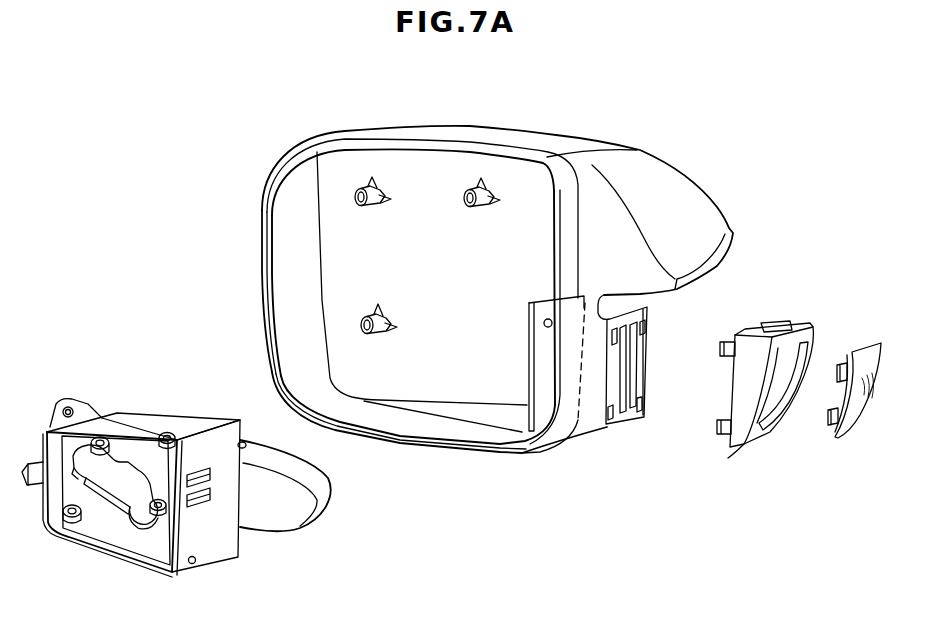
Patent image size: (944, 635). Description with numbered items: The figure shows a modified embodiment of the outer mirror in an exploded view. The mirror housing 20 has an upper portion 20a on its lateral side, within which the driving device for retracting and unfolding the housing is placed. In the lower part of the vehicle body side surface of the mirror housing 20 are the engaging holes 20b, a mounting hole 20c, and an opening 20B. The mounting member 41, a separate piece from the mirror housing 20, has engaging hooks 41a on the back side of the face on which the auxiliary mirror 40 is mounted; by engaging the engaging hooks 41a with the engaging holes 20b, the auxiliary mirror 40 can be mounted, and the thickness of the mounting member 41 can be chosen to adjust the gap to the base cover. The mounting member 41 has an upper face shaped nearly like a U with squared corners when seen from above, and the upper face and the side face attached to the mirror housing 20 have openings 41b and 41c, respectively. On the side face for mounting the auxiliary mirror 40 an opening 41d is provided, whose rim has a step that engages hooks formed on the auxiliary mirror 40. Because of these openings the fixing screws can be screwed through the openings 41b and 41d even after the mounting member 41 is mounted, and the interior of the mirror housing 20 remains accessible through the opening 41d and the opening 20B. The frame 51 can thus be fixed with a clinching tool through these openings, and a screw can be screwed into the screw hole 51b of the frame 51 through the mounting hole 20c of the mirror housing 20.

The mirror housing 20 is at (570, 142).
The upper portion 20a is at (668, 173).
The engaging holes 20b is at (610, 335).
The mounting hole 20c is at (548, 304).
The opening 20B is at (627, 406).
The mounting member 41 is at (750, 438).
The engaging hooks 41a is at (719, 347).
The opening 41b is at (775, 318).
The opening 41c is at (716, 332).
The opening 41d is at (800, 352).
The auxiliary mirror 40 is at (855, 430).
The frame 51 is at (157, 408).
The screw hole 51b is at (196, 563).